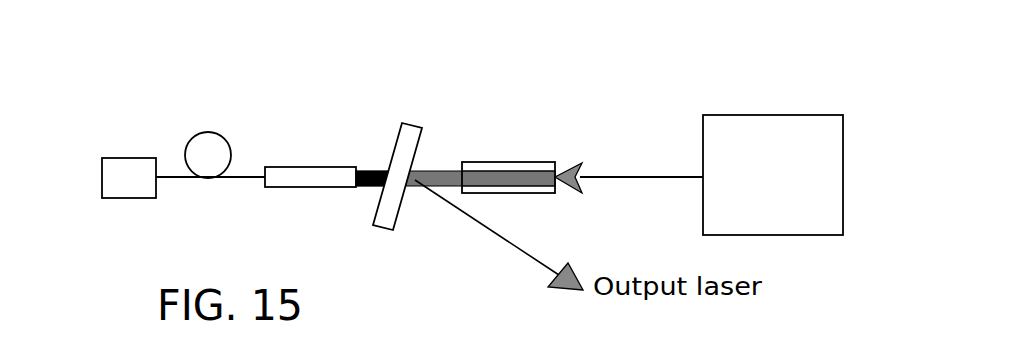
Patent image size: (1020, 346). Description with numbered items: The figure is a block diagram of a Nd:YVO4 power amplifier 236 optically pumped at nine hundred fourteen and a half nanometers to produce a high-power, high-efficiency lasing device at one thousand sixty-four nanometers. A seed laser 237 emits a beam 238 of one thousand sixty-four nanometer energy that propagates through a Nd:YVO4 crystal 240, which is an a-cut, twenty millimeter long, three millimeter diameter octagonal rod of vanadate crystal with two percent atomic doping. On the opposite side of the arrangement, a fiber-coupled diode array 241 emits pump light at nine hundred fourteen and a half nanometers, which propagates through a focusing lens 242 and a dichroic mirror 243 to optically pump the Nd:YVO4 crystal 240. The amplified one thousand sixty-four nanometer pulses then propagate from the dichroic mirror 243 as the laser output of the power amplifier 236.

The power amplifier 236 is at (748, 72).
The seed laser 237 is at (778, 123).
The beam 238 is at (632, 177).
The Nd:YVO4 crystal 240 is at (518, 187).
The fiber-coupled diode array 241 is at (130, 168).
The focusing lens 242 is at (295, 175).
The dichroic mirror 243 is at (388, 213).